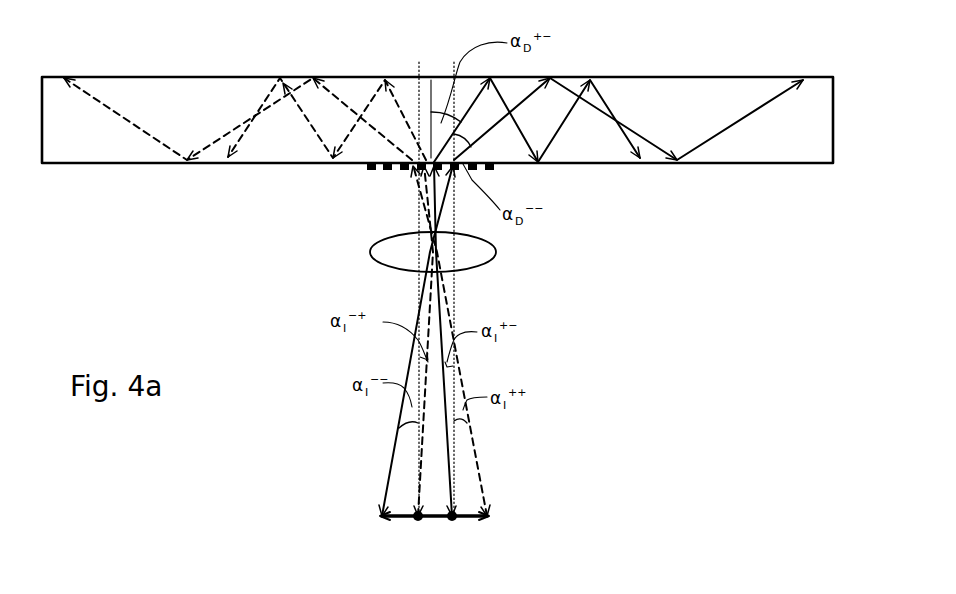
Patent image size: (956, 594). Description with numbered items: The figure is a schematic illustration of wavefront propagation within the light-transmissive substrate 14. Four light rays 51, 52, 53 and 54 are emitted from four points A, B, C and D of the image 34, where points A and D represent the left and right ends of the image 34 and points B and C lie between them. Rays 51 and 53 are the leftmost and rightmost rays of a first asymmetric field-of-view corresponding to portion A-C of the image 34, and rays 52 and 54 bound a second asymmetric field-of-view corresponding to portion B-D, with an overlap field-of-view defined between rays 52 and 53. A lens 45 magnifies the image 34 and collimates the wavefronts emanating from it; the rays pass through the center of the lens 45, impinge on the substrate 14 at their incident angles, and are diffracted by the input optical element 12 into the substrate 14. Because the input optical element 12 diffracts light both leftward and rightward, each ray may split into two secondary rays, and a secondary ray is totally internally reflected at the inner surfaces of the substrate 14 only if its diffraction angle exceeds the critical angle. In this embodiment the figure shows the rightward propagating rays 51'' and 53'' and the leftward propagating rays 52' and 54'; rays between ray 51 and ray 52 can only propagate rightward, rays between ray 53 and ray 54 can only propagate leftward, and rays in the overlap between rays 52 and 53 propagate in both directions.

The light-transmissive substrate 14 is at (72, 150).
The input optical element 12 is at (382, 172).
The lens 45 is at (477, 255).
The image 34 is at (514, 522).
The light ray 51 is at (394, 340).
The light ray 52 is at (380, 340).
The light ray 53 is at (484, 340).
The light ray 54 is at (481, 340).
The rightward propagating ray 51'' is at (630, 119).
The leftward propagating ray 52' is at (327, 119).
The rightward propagating ray 53'' is at (547, 120).
The leftward propagating ray 54' is at (238, 119).